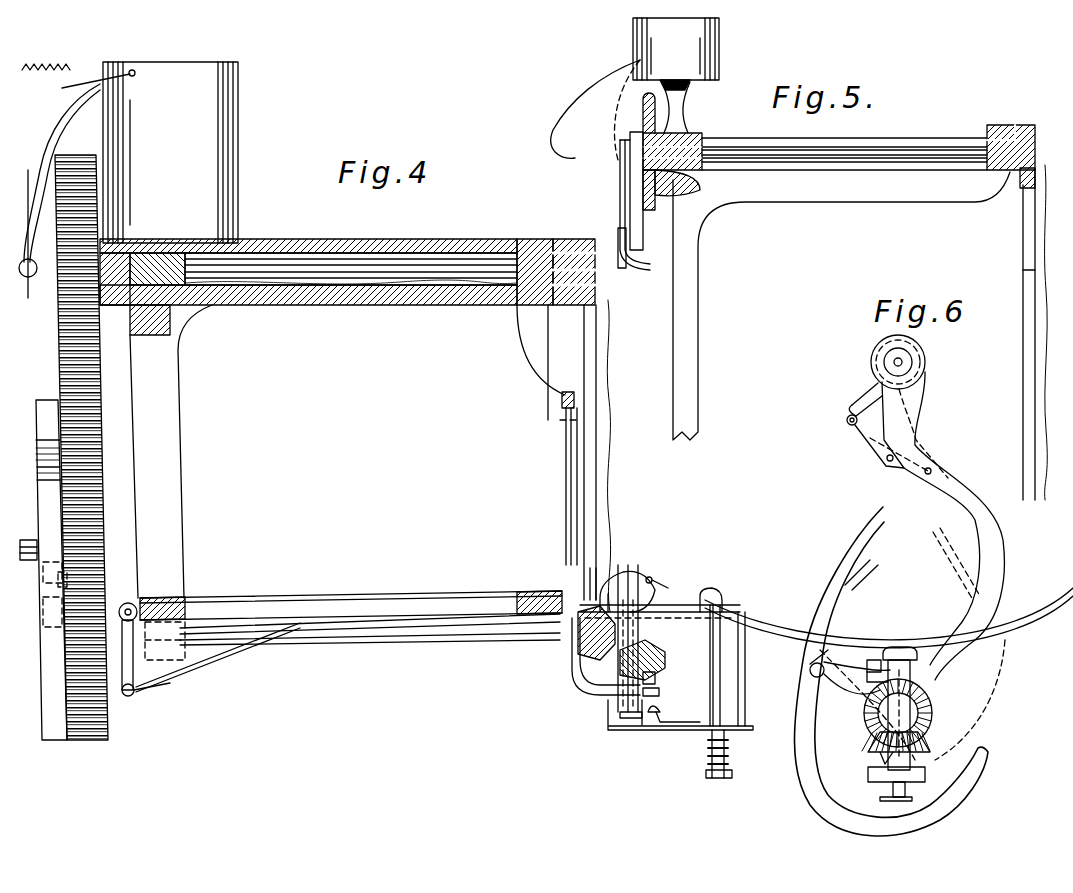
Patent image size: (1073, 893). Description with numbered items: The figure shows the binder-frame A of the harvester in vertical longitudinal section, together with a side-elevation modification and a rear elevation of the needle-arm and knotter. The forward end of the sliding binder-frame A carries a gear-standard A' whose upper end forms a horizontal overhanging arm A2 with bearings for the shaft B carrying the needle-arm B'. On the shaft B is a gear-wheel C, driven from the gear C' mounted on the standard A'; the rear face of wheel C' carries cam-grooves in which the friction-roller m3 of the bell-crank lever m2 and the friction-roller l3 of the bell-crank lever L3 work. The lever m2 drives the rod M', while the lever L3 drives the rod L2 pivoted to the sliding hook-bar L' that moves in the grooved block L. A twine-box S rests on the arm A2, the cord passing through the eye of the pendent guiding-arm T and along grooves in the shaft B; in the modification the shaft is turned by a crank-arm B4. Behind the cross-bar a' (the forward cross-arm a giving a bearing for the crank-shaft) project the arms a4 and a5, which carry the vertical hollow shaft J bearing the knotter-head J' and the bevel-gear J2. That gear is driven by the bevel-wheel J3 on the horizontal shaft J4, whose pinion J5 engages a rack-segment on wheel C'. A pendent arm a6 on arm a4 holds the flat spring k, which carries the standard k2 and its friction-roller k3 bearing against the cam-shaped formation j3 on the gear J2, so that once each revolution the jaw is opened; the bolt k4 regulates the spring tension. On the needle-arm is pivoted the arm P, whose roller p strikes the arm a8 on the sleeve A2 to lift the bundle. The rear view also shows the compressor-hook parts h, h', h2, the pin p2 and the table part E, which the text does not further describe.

In FIG. 4, the twine-box S is at (170, 152).
In FIG. 5, the twine-box S is at (676, 49).
In FIG. 4, the pendent guiding-arm T is at (77, 181).
In FIG. 4, the gear-wheel C is at (63, 447).
In FIG. 4, the gear C' is at (41, 570).
In FIG. 4, the friction-roller m3 is at (19, 560).
In FIG. 4, the friction-roller l3 is at (46, 612).
In FIG. 4, the horizontal arm A2 is at (326, 273).
In FIG. 4, the shaft B is at (323, 248).
In FIG. 5, the shaft B is at (868, 144).
In FIG. 4, the gear-standard A' is at (171, 451).
In FIG. 4, the needle-arm B' is at (592, 425).
In FIG. 5, the needle-arm B' is at (860, 332).
In FIG. 6, the needle-arm B' is at (937, 507).
In FIG. 4, the arm a8 is at (537, 435).
In FIG. 6, the arm a8 is at (850, 408).
In FIG. 4, the binder-frame A is at (351, 593).
In FIG. 4, the forward cross-arm a is at (175, 596).
In FIG. 4, the cross-bar a' is at (539, 590).
In FIG. 4, the bell-crank lever m2 is at (150, 580).
In FIG. 4, the pinion J5 is at (92, 672).
In FIG. 4, the rod L2 is at (218, 658).
In FIG. 4, the bell-crank lever L3 is at (161, 690).
In FIG. 4, the rod M' is at (370, 653).
In FIG. 4, the horizontal shaft J4 is at (370, 648).
In FIG. 4, the arm a5 is at (568, 672).
In FIG. 4, the arm a4 is at (706, 592).
In FIG. 4, the sliding hook-bar L' is at (709, 594).
In FIG. 4, the knotter-head J' is at (622, 574).
In FIG. 4, the grooved block L is at (657, 574).
In FIG. 4, the vertical shaft J is at (629, 645).
In FIG. 6, the vertical shaft J is at (892, 708).
In FIG. 4, the cam-shaped formation j3 is at (596, 633).
In FIG. 4, the bevel-gear J2 is at (645, 660).
In FIG. 6, the bevel-gear J2 is at (932, 748).
In FIG. 4, the friction-roller k3 is at (658, 678).
In FIG. 4, the standard k2 is at (660, 692).
In FIG. 4, the flat spring k is at (660, 706).
In FIG. 6, the flat spring k is at (896, 792).
In FIG. 4, the rod or bolt k4 is at (711, 691).
In FIG. 4, the pendent arm a6 is at (734, 665).
In FIG. 5, the crank-arm B4 is at (650, 200).
In FIG. 6, the friction-roller p is at (845, 421).
In FIG. 6, the arm P is at (872, 446).
In FIG. 6, the pin p2 is at (918, 480).
In FIG. 6, the hook arm h' is at (891, 671).
In FIG. 6, the pivot h is at (832, 673).
In FIG. 6, the hook arm h2 is at (899, 670).
In FIG. 6, the band E is at (880, 628).
In FIG. 6, the bevel-wheel J3 is at (904, 712).